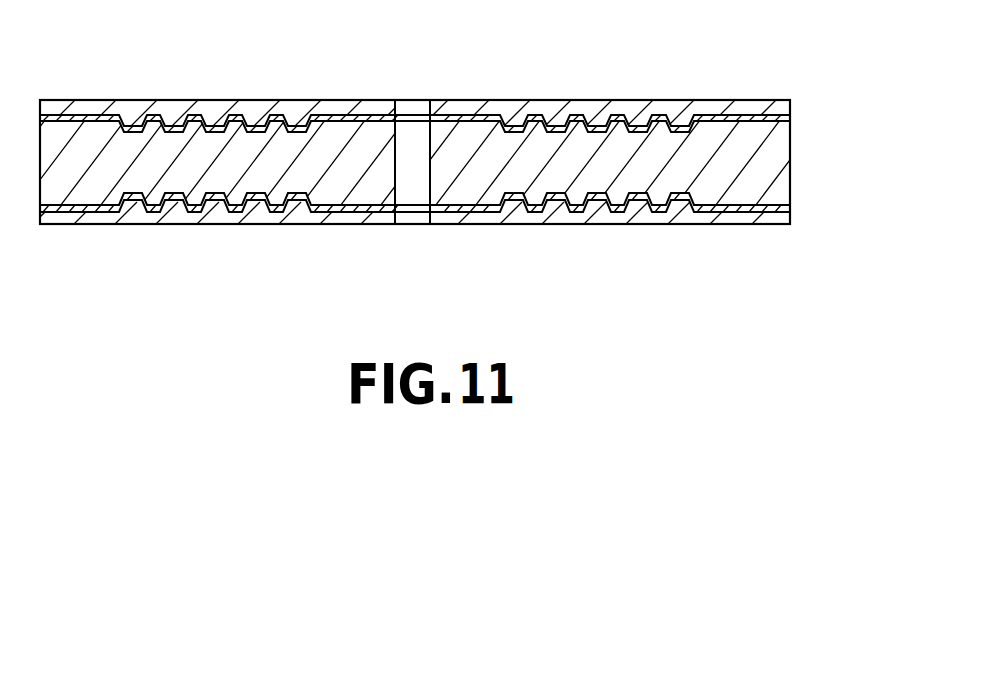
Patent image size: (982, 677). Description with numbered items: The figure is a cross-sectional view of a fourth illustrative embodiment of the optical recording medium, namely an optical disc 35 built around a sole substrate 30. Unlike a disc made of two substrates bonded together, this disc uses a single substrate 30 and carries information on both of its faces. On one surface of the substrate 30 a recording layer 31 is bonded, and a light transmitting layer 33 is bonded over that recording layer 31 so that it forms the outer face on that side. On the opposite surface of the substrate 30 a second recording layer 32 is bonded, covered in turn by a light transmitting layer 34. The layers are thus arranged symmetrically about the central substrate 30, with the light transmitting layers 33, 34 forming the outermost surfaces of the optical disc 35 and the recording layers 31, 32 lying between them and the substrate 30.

The substrate 30 is at (777, 166).
The recording layer 31 is at (775, 117).
The recording layer 32 is at (772, 204).
The light transmitting layer 33 is at (775, 104).
The light transmitting layer 34 is at (780, 219).
The optical disc 35 is at (687, 75).